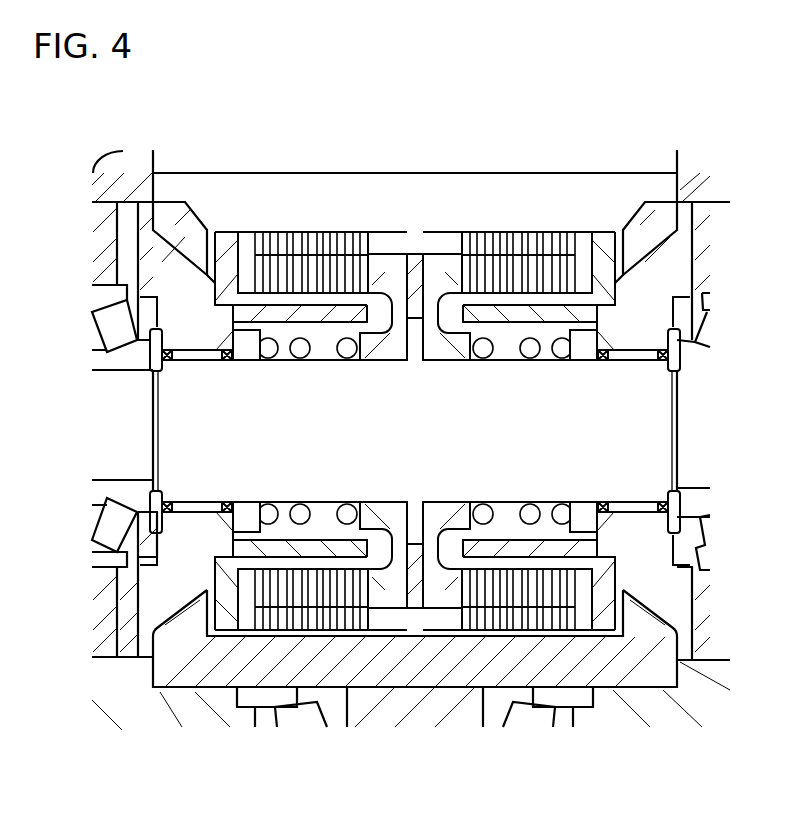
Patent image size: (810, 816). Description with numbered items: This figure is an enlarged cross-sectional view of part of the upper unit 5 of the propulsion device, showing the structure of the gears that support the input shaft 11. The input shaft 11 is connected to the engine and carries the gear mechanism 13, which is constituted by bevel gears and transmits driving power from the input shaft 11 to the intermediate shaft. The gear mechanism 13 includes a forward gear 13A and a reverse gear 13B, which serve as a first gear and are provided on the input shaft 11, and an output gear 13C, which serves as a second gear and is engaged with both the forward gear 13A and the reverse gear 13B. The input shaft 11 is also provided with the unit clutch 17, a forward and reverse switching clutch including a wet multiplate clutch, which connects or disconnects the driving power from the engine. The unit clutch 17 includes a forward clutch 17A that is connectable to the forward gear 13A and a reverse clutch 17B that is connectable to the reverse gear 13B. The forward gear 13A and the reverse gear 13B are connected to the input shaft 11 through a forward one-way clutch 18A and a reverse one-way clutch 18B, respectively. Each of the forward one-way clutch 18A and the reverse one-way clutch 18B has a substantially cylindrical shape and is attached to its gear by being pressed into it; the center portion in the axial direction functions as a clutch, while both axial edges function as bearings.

The upper unit 5 is at (735, 178).
The input shaft 11 is at (653, 463).
The gear mechanism 13 is at (411, 462).
The forward gear 13A is at (197, 277).
The reverse gear 13B is at (638, 280).
The output gear 13C is at (497, 678).
The unit clutch 17 is at (445, 436).
The forward clutch 17A is at (363, 367).
The reverse clutch 17B is at (449, 367).
The forward one-way clutch 18A is at (200, 497).
The reverse one-way clutch 18B is at (630, 497).